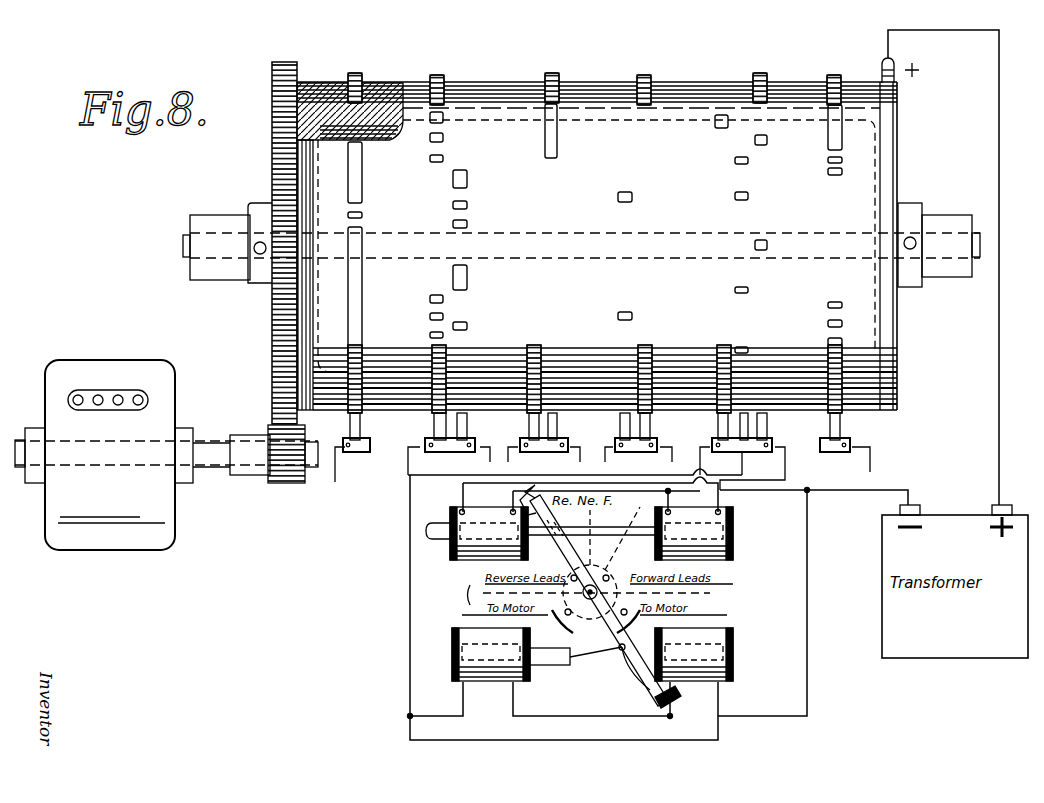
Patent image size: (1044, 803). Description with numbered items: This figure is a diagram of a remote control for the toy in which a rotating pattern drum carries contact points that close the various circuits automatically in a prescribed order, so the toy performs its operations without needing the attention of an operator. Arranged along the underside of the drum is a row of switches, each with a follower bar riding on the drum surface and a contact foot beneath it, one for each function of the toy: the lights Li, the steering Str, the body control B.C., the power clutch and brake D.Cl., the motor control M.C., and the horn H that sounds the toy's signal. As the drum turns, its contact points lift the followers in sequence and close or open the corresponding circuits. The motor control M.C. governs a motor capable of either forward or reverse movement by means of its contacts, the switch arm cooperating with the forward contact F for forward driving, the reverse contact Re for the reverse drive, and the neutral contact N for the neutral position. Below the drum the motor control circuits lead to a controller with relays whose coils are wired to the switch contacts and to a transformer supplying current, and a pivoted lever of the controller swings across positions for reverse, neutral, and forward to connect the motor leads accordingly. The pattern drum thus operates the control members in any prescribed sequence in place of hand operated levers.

The lights Li is at (352, 413).
The steering Str is at (449, 410).
The body control B.C. is at (544, 408).
The power clutch and brake D.Cl. is at (638, 408).
The motor control M.C. is at (742, 417).
The horn H is at (845, 408).
The reverse contact Re is at (715, 426).
The neutral contact N is at (739, 426).
The forward contact F is at (766, 426).